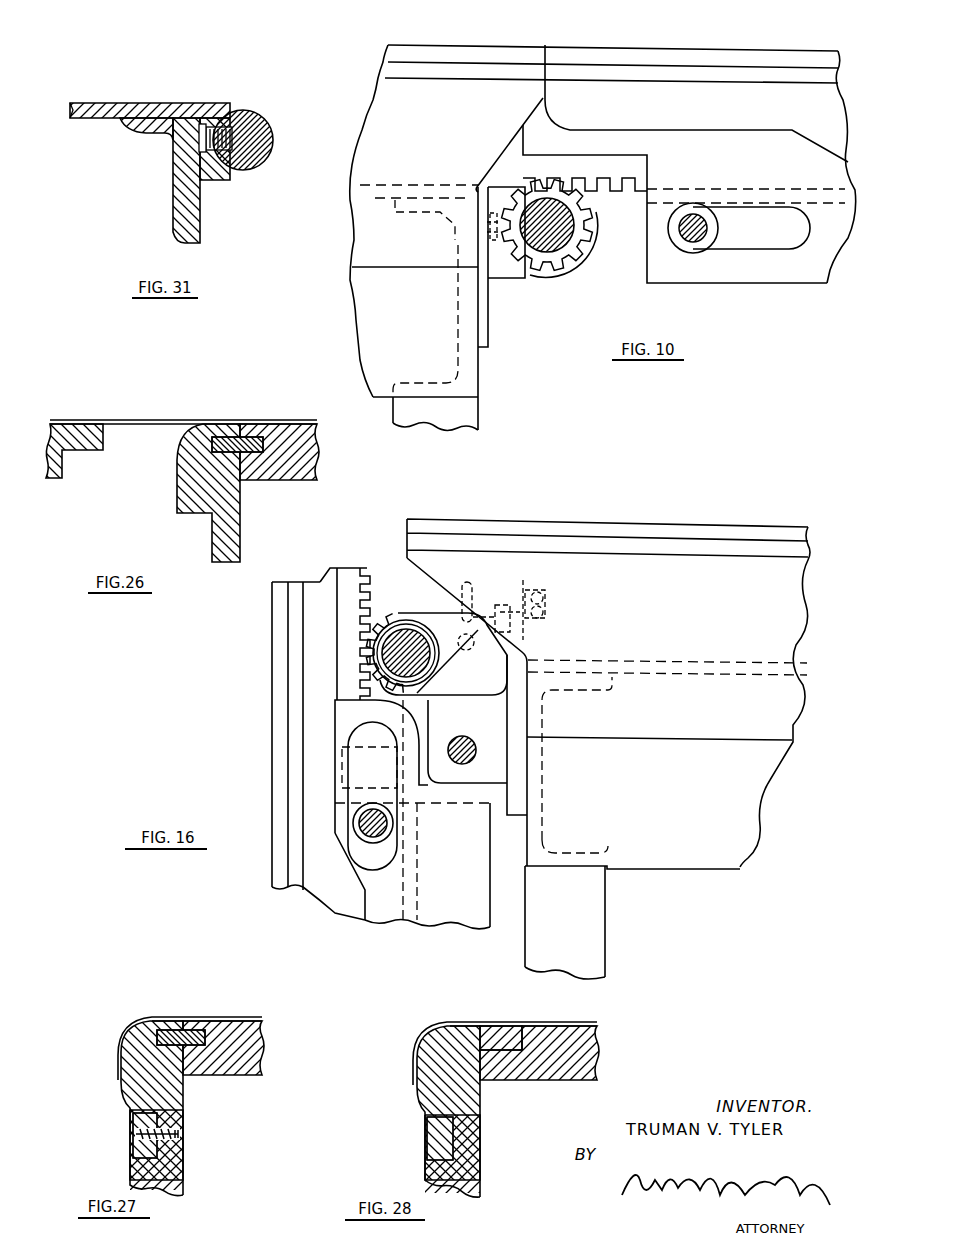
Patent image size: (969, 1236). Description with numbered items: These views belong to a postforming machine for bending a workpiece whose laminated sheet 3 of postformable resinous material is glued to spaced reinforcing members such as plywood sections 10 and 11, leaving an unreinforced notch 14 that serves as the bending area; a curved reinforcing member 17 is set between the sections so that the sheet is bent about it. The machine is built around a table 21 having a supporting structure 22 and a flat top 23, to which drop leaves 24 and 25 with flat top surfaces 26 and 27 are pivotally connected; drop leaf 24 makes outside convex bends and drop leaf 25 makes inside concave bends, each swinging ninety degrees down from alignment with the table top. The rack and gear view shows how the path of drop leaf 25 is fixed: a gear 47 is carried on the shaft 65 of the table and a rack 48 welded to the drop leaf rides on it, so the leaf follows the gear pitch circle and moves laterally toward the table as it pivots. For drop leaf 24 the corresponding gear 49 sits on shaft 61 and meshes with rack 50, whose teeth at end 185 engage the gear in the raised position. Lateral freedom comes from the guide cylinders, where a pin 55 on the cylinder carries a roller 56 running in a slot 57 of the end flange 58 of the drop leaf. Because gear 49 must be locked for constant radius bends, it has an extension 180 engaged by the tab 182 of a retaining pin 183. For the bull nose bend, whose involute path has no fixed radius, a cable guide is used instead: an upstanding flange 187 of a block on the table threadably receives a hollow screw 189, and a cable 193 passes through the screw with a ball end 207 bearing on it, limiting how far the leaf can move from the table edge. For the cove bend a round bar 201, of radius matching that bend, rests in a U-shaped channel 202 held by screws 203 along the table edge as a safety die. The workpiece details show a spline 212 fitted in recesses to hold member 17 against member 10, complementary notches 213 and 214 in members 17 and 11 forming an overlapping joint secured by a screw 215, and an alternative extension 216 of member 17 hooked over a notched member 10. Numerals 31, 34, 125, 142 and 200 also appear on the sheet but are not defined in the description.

In FIG. 26, the laminated sheet 3 is at (270, 420).
In FIG. 27, the laminated sheet 3 is at (205, 1016).
In FIG. 28, the laminated sheet 3 is at (413, 1080).
In FIG. 26, the reinforcing member 10 is at (286, 442).
In FIG. 27, the reinforcing member 10 is at (247, 1060).
In FIG. 28, the reinforcing member 10 is at (562, 1052).
In FIG. 26, the reinforcing member 11 is at (80, 428).
In FIG. 27, the reinforcing member 11 is at (142, 1165).
In FIG. 28, the reinforcing member 11 is at (435, 1158).
In FIG. 26, the notch 14 is at (140, 427).
In FIG. 26, the curved reinforcing member 17 is at (186, 470).
In FIG. 27, the curved reinforcing member 17 is at (136, 1030).
In FIG. 28, the curved reinforcing member 17 is at (432, 1042).
In FIG. 31, the table 21 is at (165, 96).
In FIG. 10, the table 21 is at (373, 63).
In FIG. 16, the table 21 is at (725, 510).
In FIG. 31, the supporting structure 22 is at (150, 128).
In FIG. 10, the supporting structure 22 is at (466, 362).
In FIG. 16, the supporting structure 22 is at (643, 862).
In FIG. 31, the flat top 23 is at (102, 103).
In FIG. 10, the flat top 23 is at (448, 185).
In FIG. 16, the flat top 23 is at (672, 660).
In FIG. 16, the drop leaf 24 is at (240, 690).
In FIG. 10, the drop leaf 25 is at (756, 46).
In FIG. 16, the flat top surface 26 is at (402, 905).
In FIG. 10, the flat top surface 27 is at (745, 192).
In FIG. 10, the rail 31 is at (432, 45).
In FIG. 16, the rail 31 is at (618, 520).
In FIG. 16, the post 34 is at (272, 780).
In FIG. 10, the gear 47 is at (586, 233).
In FIG. 10, the rack 48 is at (612, 168).
In FIG. 16, the gear 49 is at (410, 620).
In FIG. 16, the rack 50 is at (357, 600).
In FIG. 16, the pin 55 is at (388, 828).
In FIG. 16, the roller 56 is at (356, 805).
In FIG. 16, the slot 57 is at (373, 732).
In FIG. 16, the end flange 58 is at (454, 908).
In FIG. 16, the shaft 61 is at (394, 628).
In FIG. 10, the shaft 65 is at (549, 242).
In FIG. 10, the rail section 125 is at (614, 52).
In FIG. 16, the pivot pin 142 is at (470, 754).
In FIG. 16, the extension 180 is at (449, 636).
In FIG. 16, the projecting tab 182 is at (470, 644).
In FIG. 16, the retaining pin 183 is at (466, 654).
In FIG. 16, the end of rack 185 is at (352, 580).
In FIG. 16, the upstanding flange 187 is at (538, 640).
In FIG. 16, the hollow screw member 189 is at (496, 600).
In FIG. 16, the cable 193 is at (426, 612).
In FIG. 31, the screw 200 is at (217, 120).
In FIG. 31, the round bar 201 is at (262, 121).
In FIG. 10, the round bar 201 is at (571, 258).
In FIG. 31, the U-shaped channel 202 is at (221, 180).
In FIG. 10, the U-shaped channel 202 is at (502, 270).
In FIG. 31, the screws 203 is at (198, 140).
In FIG. 10, the screws 203 is at (490, 228).
In FIG. 16, the ball end 207 is at (547, 612).
In FIG. 26, the spline 212 is at (226, 437).
In FIG. 27, the spline 212 is at (166, 1030).
In FIG. 26, the notch 213 is at (75, 452).
In FIG. 26, the notch 214 is at (206, 520).
In FIG. 27, the screw 215 is at (182, 1132).
In FIG. 28, the extension 216 is at (497, 1045).